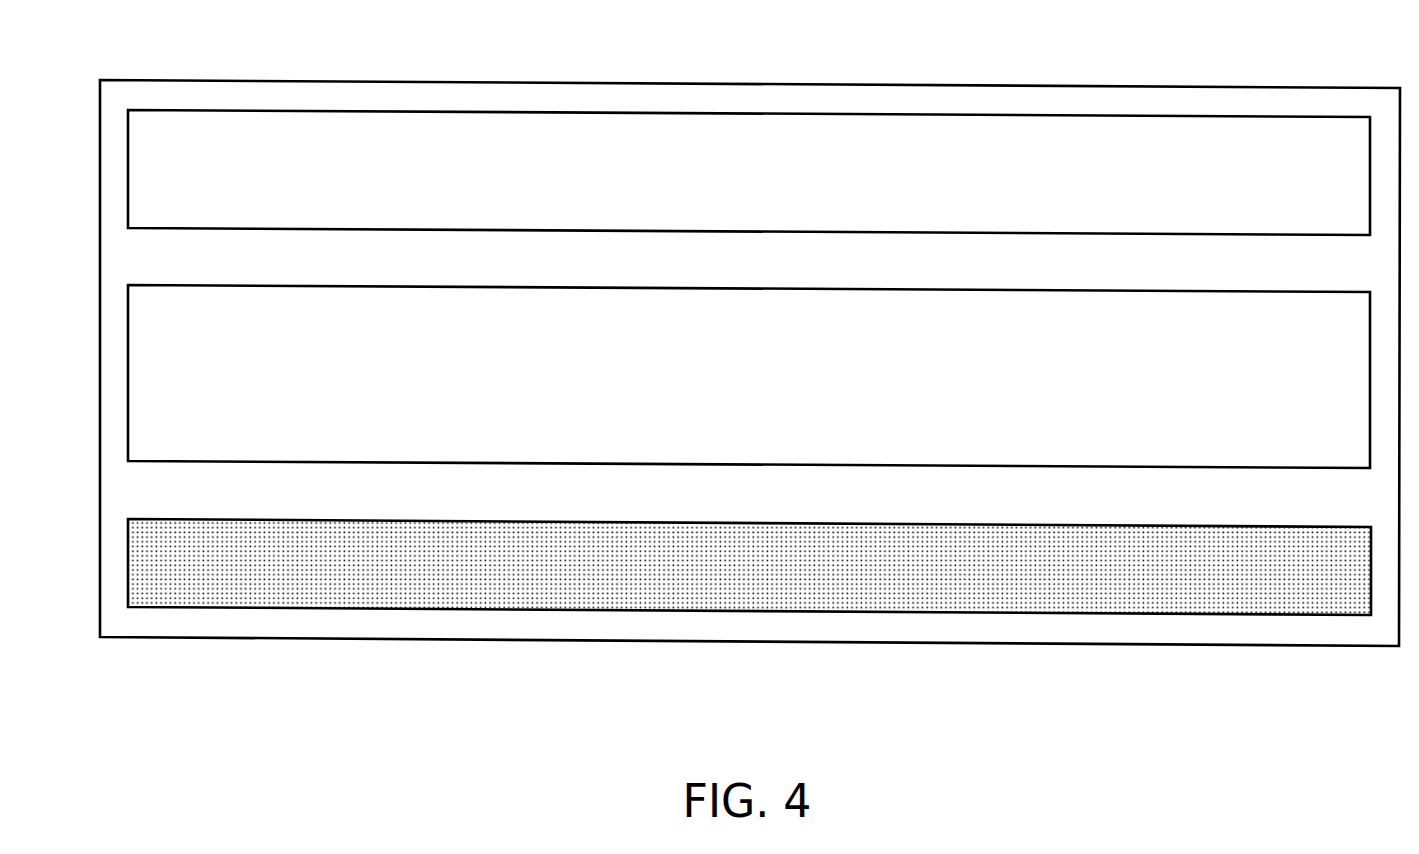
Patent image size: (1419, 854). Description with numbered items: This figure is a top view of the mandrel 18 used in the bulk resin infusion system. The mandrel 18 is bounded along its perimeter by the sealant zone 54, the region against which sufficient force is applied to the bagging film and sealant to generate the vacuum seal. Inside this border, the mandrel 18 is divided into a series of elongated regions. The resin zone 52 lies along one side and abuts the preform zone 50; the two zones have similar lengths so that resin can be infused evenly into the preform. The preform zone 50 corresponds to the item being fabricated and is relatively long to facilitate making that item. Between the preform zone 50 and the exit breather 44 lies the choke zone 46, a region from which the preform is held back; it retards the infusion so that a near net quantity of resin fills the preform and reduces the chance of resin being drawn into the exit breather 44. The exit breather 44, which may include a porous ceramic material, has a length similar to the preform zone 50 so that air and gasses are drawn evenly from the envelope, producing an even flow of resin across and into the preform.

The mandrel 18 is at (750, 369).
The sealant zone 54 is at (304, 96).
The resin zone 52 is at (737, 183).
The preform zone 50 is at (737, 388).
The choke zone 46 is at (737, 505).
The exit breather 44 is at (358, 609).